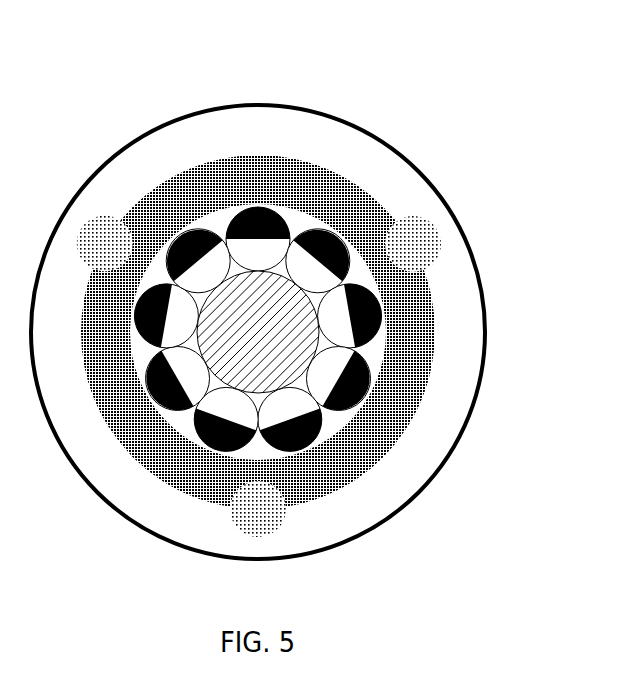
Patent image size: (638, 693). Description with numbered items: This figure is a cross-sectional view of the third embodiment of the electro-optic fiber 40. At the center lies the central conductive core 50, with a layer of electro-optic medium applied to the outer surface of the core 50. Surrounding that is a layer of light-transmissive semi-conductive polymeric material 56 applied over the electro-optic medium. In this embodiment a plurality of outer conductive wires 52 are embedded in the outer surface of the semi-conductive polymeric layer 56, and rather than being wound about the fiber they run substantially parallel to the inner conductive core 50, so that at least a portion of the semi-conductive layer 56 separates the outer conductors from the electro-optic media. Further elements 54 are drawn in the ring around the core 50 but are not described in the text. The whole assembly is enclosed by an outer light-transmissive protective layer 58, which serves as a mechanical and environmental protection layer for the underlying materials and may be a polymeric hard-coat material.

The electro-optic fiber 40 is at (93, 115).
The central conductive core 50 is at (280, 349).
The outer conductive wires 52 is at (438, 232).
The strands 54 is at (316, 239).
The layer of light-transmissive semi-conductive polymeric material 56 is at (222, 175).
The outer light-transmissive protective layer 58 is at (162, 138).